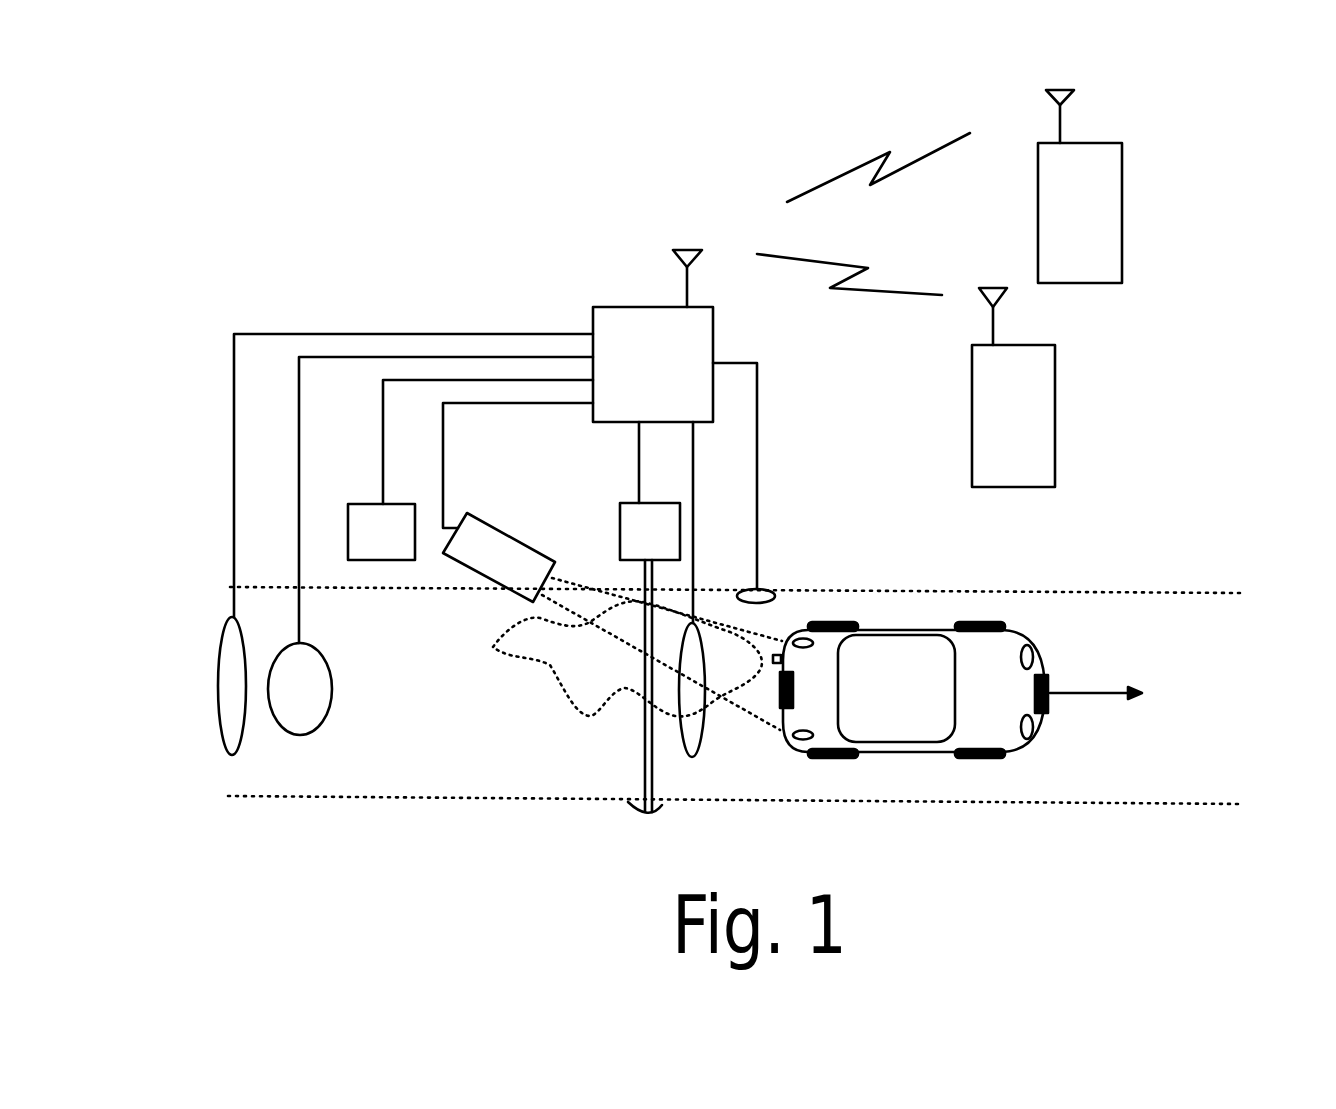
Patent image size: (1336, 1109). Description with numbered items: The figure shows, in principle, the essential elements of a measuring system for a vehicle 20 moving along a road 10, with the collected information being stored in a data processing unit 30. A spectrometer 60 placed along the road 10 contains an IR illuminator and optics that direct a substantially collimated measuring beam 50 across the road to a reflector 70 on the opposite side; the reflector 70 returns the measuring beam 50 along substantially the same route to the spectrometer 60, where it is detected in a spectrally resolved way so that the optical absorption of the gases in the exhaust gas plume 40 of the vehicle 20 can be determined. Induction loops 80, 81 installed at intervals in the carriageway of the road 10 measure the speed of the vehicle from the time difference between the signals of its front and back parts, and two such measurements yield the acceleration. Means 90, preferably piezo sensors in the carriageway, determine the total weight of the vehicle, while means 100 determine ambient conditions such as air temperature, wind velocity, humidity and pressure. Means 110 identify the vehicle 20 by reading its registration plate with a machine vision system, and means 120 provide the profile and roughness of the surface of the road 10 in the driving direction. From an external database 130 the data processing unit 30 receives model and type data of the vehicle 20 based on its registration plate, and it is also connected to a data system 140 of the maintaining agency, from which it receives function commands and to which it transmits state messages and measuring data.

The road 10 is at (1175, 638).
The vehicle 20 is at (890, 670).
The data processing unit 30 is at (647, 328).
The exhaust gas plume 40 is at (592, 652).
The measuring beam 50 is at (645, 728).
The spectrometer 60 is at (652, 537).
The reflector 70 is at (660, 803).
The induction loop 80 is at (227, 712).
The induction loop 81 is at (695, 717).
The means for determining the total weight of the vehicle 90 is at (312, 713).
The means for determining ambient conditions 100 is at (380, 545).
The means for identifying the vehicle 110 is at (507, 560).
The means for determining the profile and roughness of the road surface 120 is at (760, 593).
The external database 130 is at (1093, 217).
The data system 140 is at (1020, 417).